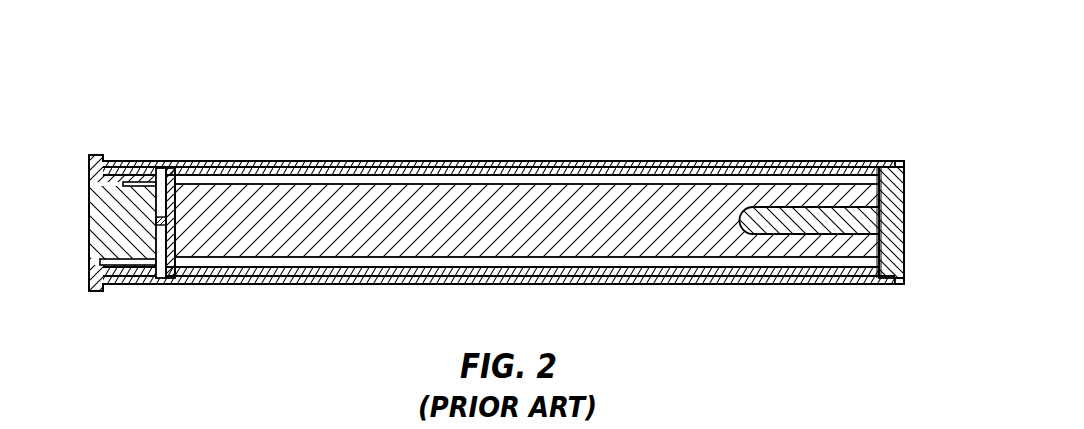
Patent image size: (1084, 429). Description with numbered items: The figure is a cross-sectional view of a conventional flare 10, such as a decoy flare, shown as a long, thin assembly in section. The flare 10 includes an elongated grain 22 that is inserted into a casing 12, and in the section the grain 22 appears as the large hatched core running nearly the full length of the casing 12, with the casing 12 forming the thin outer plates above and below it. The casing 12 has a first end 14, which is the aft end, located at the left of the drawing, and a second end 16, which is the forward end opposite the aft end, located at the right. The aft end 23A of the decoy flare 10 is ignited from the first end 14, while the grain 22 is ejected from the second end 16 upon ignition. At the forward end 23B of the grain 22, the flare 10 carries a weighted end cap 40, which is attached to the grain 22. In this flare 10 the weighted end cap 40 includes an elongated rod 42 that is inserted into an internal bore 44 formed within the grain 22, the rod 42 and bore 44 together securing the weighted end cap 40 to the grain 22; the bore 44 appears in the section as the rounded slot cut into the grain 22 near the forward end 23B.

The flare 10 is at (450, 85).
The casing 12 is at (311, 161).
The first end 14 is at (76, 178).
The second end 16 is at (926, 184).
The elongated grain 22 is at (603, 198).
The aft end 23A is at (181, 200).
The forward end 23B is at (880, 190).
The weighted end cap 40 is at (895, 245).
The elongated rod 42 is at (795, 222).
The internal bore 44 is at (806, 210).